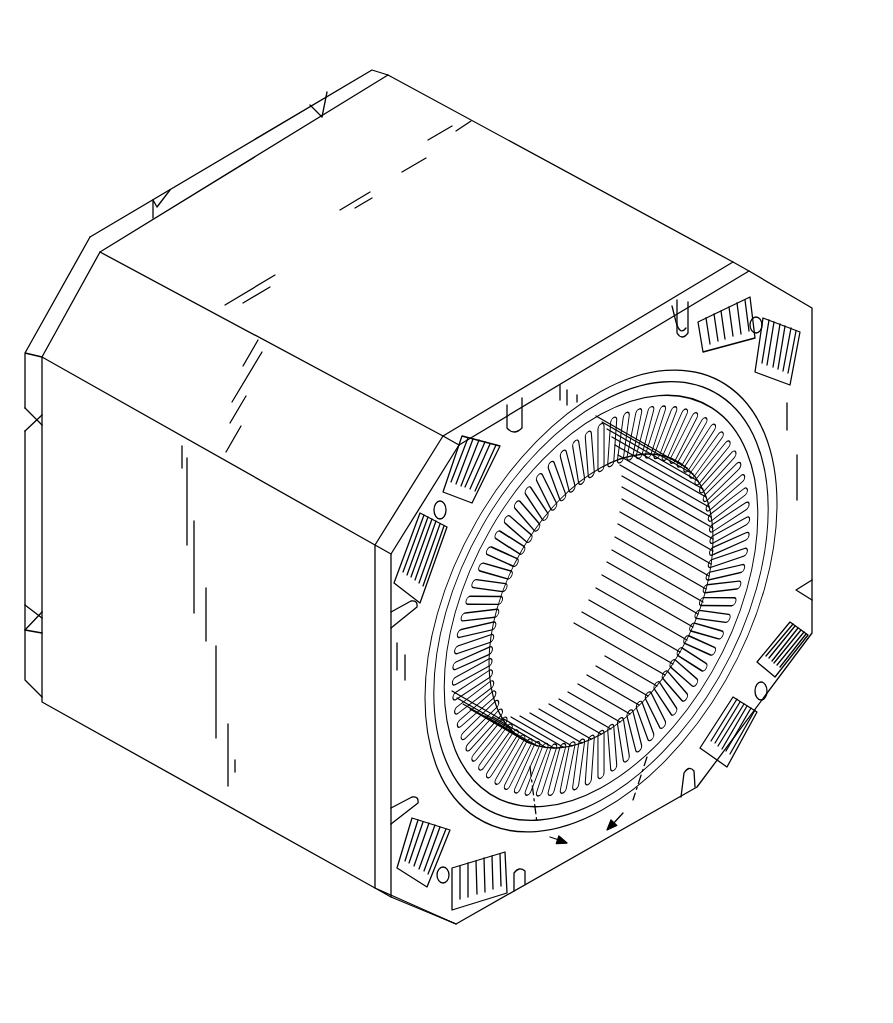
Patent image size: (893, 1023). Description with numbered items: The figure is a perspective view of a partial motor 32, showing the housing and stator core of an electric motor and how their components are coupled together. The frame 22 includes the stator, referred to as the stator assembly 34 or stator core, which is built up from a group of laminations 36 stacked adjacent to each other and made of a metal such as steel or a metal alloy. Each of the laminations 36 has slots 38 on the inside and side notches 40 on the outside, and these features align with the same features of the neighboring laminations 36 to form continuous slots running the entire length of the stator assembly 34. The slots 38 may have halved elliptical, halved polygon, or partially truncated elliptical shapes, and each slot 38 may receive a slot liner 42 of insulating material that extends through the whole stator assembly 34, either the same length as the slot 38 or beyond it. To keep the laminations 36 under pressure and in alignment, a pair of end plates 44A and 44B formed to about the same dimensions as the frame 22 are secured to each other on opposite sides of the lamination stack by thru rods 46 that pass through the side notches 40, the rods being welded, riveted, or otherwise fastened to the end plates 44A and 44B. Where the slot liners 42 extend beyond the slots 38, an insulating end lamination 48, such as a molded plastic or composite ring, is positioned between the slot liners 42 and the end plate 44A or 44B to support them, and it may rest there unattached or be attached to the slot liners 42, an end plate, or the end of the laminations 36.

The partial motor 32 is at (520, 59).
The frame 22 is at (568, 168).
The end plate 44B is at (62, 287).
The end plate 44A is at (805, 428).
The side notches 40 is at (683, 306).
The thru rods 46 is at (680, 331).
The stator assembly 34 is at (752, 464).
The insulating end lamination 48 is at (748, 505).
The laminations 36 is at (708, 538).
The slots 38 is at (712, 573).
The slot liner 42 is at (586, 765).